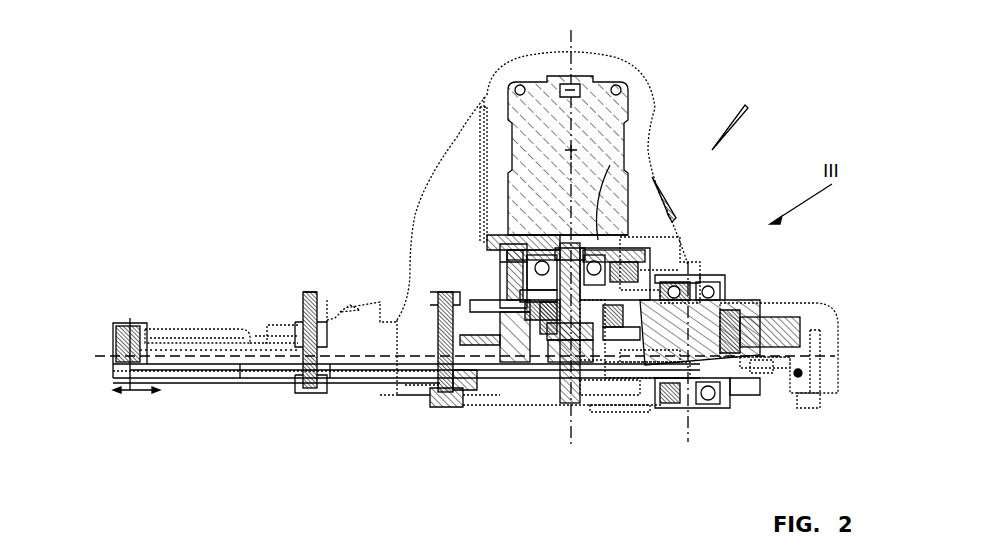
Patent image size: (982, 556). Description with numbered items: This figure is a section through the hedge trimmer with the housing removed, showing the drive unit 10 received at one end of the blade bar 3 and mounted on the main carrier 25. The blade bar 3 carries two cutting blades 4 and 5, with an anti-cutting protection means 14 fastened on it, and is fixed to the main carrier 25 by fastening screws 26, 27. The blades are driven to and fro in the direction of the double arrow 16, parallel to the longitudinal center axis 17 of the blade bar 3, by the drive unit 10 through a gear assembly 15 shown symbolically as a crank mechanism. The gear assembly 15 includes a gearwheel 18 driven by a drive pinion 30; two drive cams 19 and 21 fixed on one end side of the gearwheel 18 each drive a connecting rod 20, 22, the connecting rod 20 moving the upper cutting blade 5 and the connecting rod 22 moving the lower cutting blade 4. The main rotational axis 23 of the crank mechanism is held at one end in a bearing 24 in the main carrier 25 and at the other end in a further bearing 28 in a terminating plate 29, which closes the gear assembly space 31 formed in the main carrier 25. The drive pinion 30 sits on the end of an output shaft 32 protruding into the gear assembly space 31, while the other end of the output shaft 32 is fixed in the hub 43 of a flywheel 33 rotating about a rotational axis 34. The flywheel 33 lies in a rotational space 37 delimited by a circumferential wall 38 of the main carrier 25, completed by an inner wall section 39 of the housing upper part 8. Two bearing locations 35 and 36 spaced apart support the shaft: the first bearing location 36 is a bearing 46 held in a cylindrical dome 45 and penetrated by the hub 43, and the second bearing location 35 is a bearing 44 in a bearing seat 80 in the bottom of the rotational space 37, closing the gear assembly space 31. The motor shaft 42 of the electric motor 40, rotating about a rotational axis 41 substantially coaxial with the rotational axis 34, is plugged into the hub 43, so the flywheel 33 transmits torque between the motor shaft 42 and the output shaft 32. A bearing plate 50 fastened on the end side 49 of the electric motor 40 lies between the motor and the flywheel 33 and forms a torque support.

The blade bar 3 is at (198, 354).
The cutting blade 4 is at (205, 375).
The cutting blade 5 is at (271, 370).
The housing upper part 8 is at (488, 97).
The drive unit 10 is at (703, 150).
The anti-cutting protection means 14 is at (158, 338).
The gear assembly 15 is at (742, 330).
The double arrow 16 is at (136, 394).
The longitudinal center axis 17 is at (110, 356).
The gearwheel 18 is at (795, 340).
The drive cam 19 is at (738, 385).
The connecting rod 20 is at (626, 357).
The drive cam 21 is at (640, 370).
The connecting rod 22 is at (572, 385).
The main rotational axis 23 is at (692, 403).
The bearing 24 is at (712, 301).
The main carrier 25 is at (293, 322).
The fastening screw 26 is at (311, 296).
The fastening screw 27 is at (432, 405).
The bearing 28 is at (712, 398).
The terminating plate 29 is at (476, 392).
The drive pinion 30 is at (567, 333).
The gear assembly space 31 is at (801, 372).
The output shaft 32 is at (562, 325).
The flywheel 33 is at (655, 268).
The rotational axis 34 is at (575, 155).
The second bearing location 35 is at (520, 320).
The first bearing location 36 is at (500, 265).
The rotational space 37 is at (645, 250).
The circumferential wall 38 is at (655, 258).
The inner wall section 39 is at (480, 148).
The electric motor 40 is at (540, 102).
The rotational axis 41 is at (575, 33).
The motor shaft 42 is at (507, 250).
The hub 43 is at (598, 240).
The bearing 44 is at (585, 345).
The cylindrical dome 45 is at (692, 290).
The bearing 46 is at (520, 263).
The end side 49 is at (612, 243).
The bearing plate 50 is at (498, 233).
The bearing seat 80 is at (545, 323).